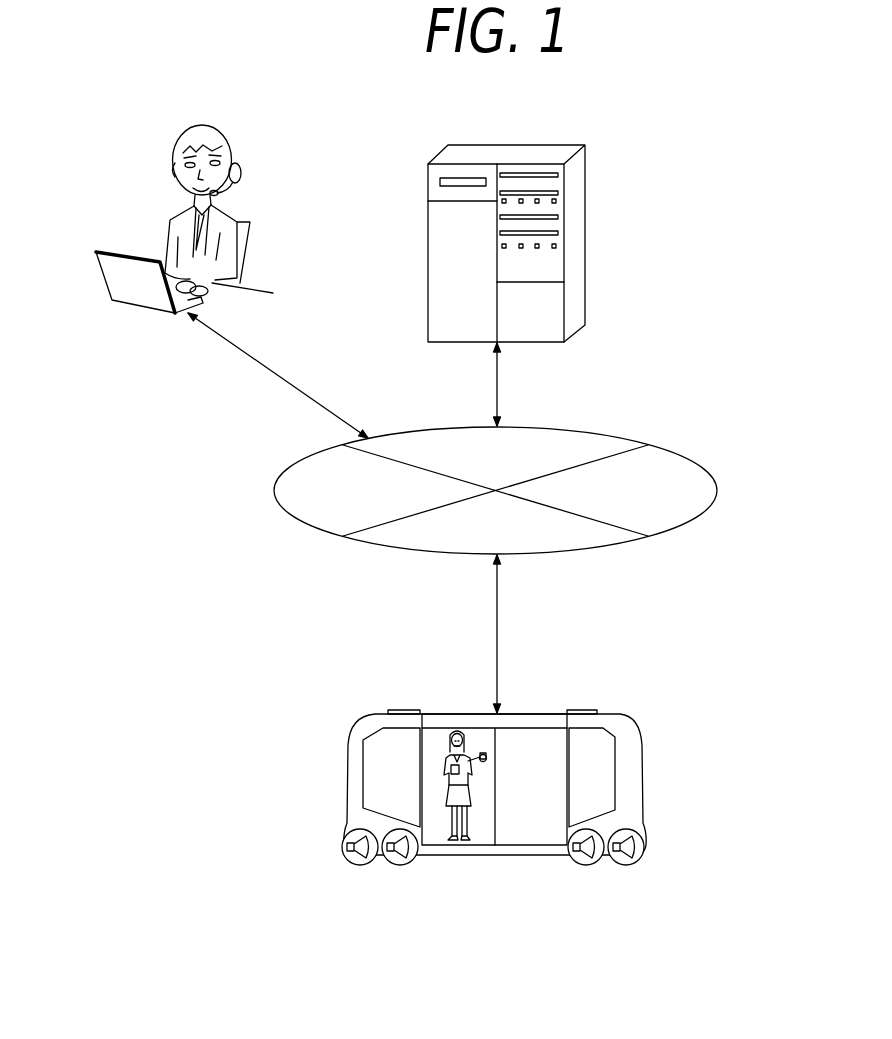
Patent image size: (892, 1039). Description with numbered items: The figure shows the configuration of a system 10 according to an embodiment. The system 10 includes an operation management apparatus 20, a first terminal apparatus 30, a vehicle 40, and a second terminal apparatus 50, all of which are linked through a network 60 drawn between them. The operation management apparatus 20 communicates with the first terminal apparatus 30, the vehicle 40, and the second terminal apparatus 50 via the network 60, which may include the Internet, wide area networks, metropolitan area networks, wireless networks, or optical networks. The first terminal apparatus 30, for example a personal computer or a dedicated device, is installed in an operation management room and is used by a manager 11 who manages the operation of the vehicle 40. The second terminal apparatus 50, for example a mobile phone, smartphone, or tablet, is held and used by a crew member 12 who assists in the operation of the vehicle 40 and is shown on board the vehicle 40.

The system 10 is at (746, 300).
The manager 11 is at (172, 224).
The crew member 12 is at (468, 793).
The operation management apparatus 20 is at (575, 238).
The first terminal apparatus 30 is at (138, 291).
The vehicle 40 is at (445, 713).
The second terminal apparatus 50 is at (472, 773).
The network 60 is at (717, 488).